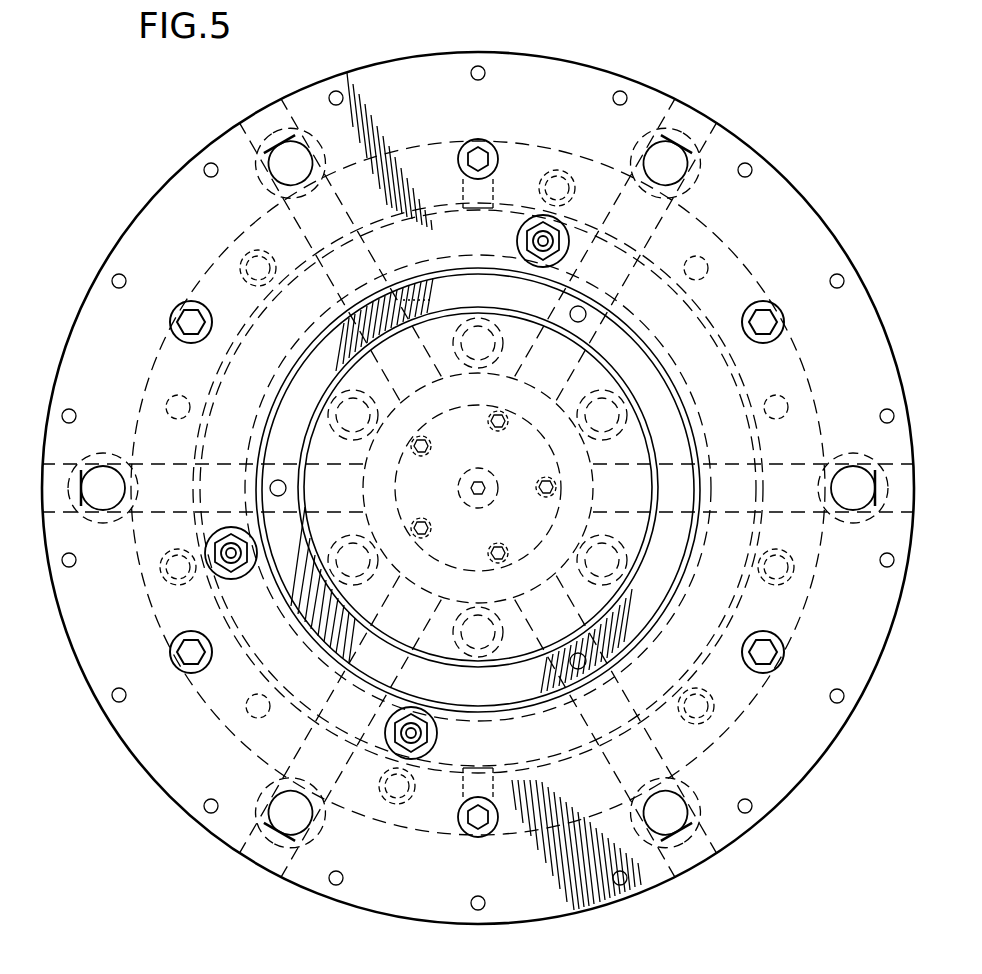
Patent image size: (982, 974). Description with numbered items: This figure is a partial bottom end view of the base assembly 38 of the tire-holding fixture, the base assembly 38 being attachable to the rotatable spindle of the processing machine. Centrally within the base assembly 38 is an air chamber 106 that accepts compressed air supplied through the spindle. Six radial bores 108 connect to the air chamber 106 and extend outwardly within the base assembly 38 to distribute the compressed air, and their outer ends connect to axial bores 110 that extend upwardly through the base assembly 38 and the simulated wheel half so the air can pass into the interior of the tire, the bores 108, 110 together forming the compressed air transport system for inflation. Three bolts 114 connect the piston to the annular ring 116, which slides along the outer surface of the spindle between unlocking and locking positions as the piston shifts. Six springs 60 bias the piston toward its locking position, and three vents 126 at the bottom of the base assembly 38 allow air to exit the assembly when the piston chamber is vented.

The base assembly 38 is at (710, 125).
The spring 60 is at (432, 372).
The air chamber 106 is at (468, 668).
The radial bores 108 is at (262, 208).
The axial bores 110 is at (291, 125).
The bolt 114 is at (272, 484).
The annular ring 116 is at (411, 292).
The vent 126 is at (531, 214).